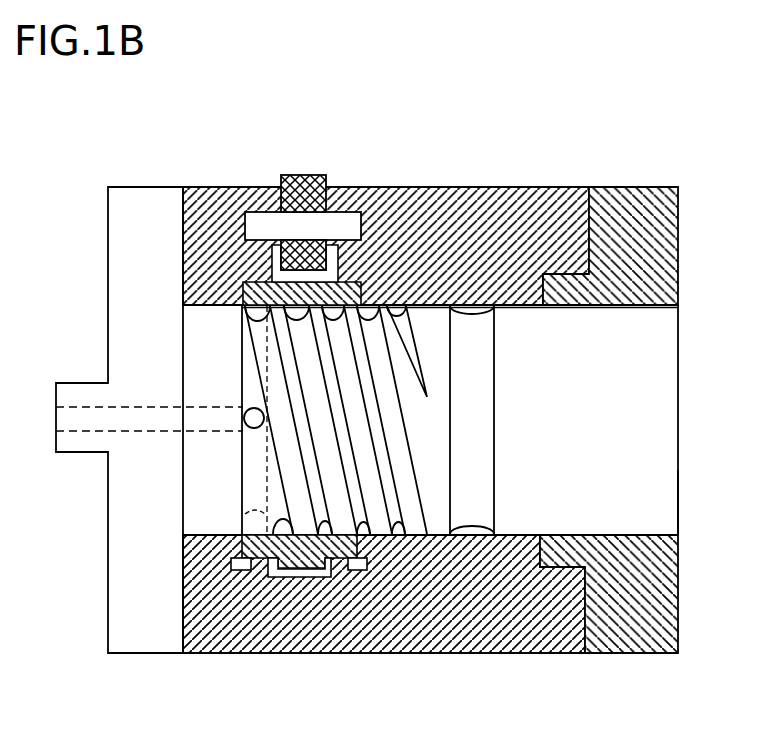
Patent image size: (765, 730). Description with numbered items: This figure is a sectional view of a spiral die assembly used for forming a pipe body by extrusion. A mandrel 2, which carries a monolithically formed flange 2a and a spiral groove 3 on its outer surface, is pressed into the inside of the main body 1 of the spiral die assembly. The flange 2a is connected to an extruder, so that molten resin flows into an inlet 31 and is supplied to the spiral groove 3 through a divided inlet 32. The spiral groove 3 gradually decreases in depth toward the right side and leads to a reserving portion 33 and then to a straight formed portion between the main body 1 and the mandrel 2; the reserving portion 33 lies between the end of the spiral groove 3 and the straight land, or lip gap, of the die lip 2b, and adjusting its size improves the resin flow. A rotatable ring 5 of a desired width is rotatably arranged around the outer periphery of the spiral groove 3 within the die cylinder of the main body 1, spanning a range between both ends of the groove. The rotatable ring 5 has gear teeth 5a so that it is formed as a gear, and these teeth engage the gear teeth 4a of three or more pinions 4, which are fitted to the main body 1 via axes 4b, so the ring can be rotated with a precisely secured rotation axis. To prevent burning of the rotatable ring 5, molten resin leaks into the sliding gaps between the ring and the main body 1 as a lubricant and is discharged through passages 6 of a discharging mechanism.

The main body 1 is at (548, 187).
The mandrel 2 is at (657, 350).
The flange 2a is at (165, 186).
The die lip 2b is at (678, 482).
The spiral groove 3 is at (277, 502).
The reserving portion 33 is at (473, 536).
The pinion 4 is at (204, 221).
The gear teeth of pinion 4a is at (300, 176).
The axe 4b is at (261, 222).
The rotatable ring 5 is at (345, 572).
The gear teeth of rotatable ring 5a is at (295, 582).
The passage 6 is at (233, 571).
The inlet 31 is at (92, 407).
The divided inlet 32 is at (245, 430).